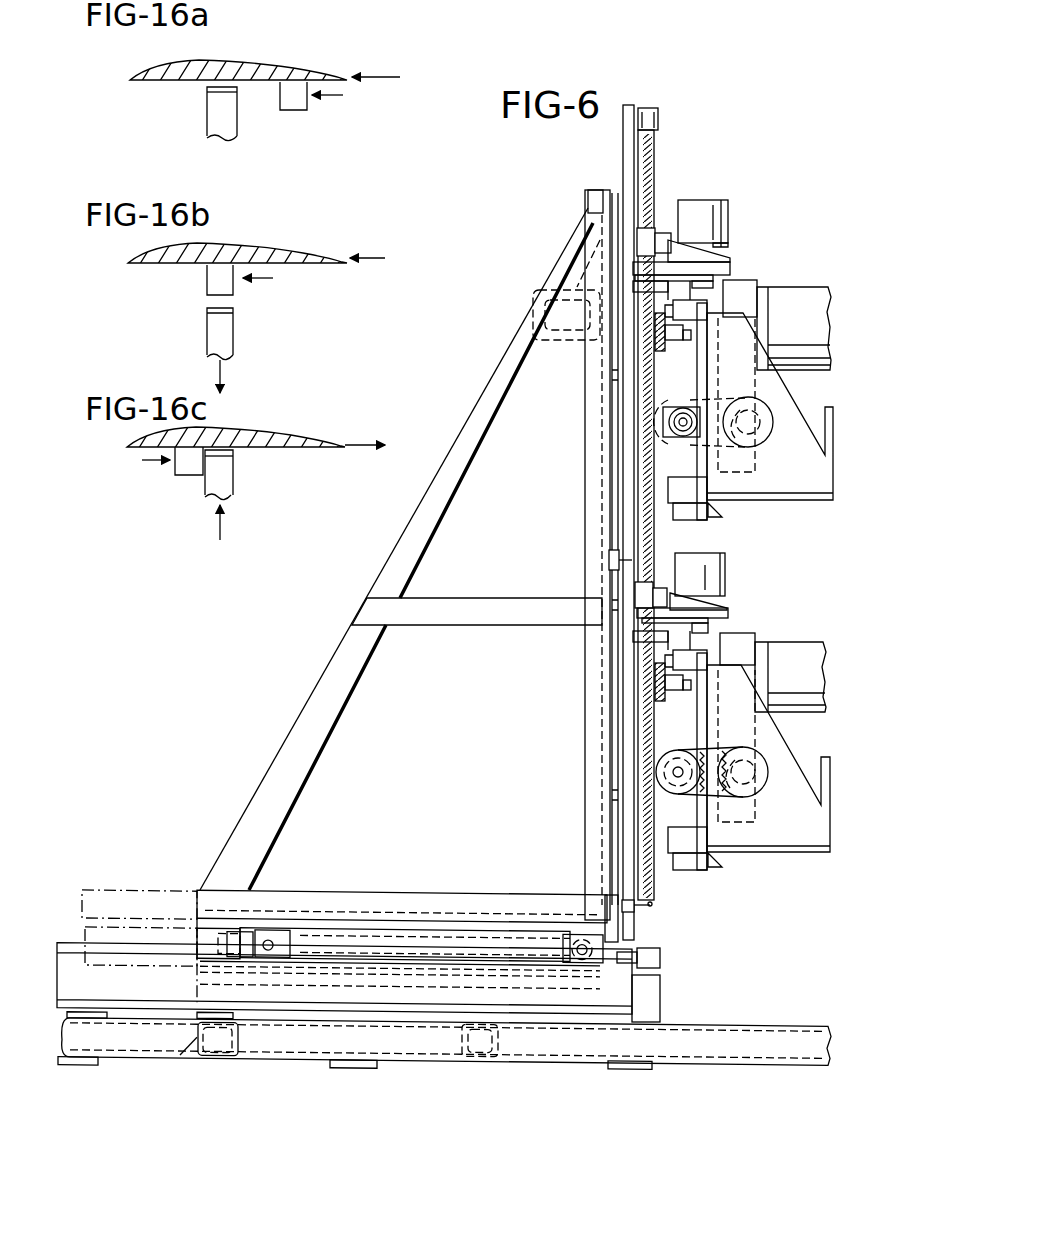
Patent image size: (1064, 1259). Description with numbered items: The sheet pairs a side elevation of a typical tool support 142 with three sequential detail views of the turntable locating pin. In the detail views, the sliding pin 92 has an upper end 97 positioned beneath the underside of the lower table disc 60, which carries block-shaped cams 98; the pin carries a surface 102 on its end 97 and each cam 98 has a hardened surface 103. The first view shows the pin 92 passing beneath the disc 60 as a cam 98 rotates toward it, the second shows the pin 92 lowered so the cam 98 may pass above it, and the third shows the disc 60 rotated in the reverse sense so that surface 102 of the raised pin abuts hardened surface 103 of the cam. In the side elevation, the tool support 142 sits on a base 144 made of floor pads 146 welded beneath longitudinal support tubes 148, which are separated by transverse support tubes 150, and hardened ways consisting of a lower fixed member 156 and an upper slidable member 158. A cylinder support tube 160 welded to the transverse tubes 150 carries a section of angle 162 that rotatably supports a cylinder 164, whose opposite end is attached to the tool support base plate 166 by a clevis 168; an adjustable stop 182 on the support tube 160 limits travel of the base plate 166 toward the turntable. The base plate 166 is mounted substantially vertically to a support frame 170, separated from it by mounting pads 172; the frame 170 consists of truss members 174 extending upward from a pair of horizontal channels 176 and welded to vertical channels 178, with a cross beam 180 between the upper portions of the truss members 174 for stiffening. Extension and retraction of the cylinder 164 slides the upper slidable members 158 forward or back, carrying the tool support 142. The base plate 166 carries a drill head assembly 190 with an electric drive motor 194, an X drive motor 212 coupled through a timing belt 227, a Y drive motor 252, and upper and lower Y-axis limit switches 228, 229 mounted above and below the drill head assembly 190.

In FIG. 16A, the lower table disc 60 is at (171, 84).
In FIG. 16B, the lower table disc 60 is at (168, 266).
In FIG. 16C, the lower table disc 60 is at (312, 450).
In FIG. 16B, the sliding pin 92 is at (236, 340).
In FIG. 16C, the sliding pin 92 is at (235, 488).
In FIG. 16A, the upper end 97 is at (226, 110).
In FIG. 16A, the block-shaped cams 98 is at (292, 106).
In FIG. 16B, the block-shaped cams 98 is at (236, 284).
In FIG. 16C, the block-shaped cams 98 is at (175, 463).
In FIG. 16A, the surface 102 is at (207, 95).
In FIG. 16C, the surface 102 is at (236, 465).
In FIG. 16A, the hardened surface 103 is at (308, 98).
In FIG. 16C, the hardened surface 103 is at (212, 470).
In FIG. 6, the tool support 142 is at (292, 718).
In FIG. 6, the base 144 is at (318, 1067).
In FIG. 6, the floor pads 146 is at (82, 1067).
In FIG. 6, the longitudinal support tubes 148 is at (253, 1044).
In FIG. 6, the transverse support tubes 150 is at (177, 1056).
In FIG. 6, the lower fixed member 156 is at (155, 992).
In FIG. 6, the upper slidable member 158 is at (195, 939).
In FIG. 6, the cylinder support tube 160 is at (655, 1000).
In FIG. 6, the section of angle 162 is at (212, 885).
In FIG. 6, the cylinder 164 is at (357, 937).
In FIG. 6, the tool support base plate 166 is at (622, 925).
In FIG. 6, the clevis 168 is at (590, 938).
In FIG. 6, the support frame 170 is at (430, 555).
In FIG. 6, the mounting pads 172 is at (618, 192).
In FIG. 6, the truss members 174 is at (362, 665).
In FIG. 6, the horizontal channels 176 is at (330, 890).
In FIG. 6, the vertical channels 178 is at (587, 488).
In FIG. 6, the cross beam 180 is at (548, 299).
In FIG. 6, the adjustable stop 182 is at (660, 955).
In FIG. 6, the drill head assembly 190 is at (788, 258).
In FIG. 6, the electric drive motor 194 is at (806, 300).
In FIG. 6, the X drive motor 212 is at (762, 446).
In FIG. 6, the timing belt 227 is at (737, 440).
In FIG. 6, the upper Y-axis limit switch 228 is at (619, 556).
In FIG. 6, the lower Y-axis limit switch 229 is at (625, 900).
In FIG. 6, the Y drive motor 252 is at (730, 213).